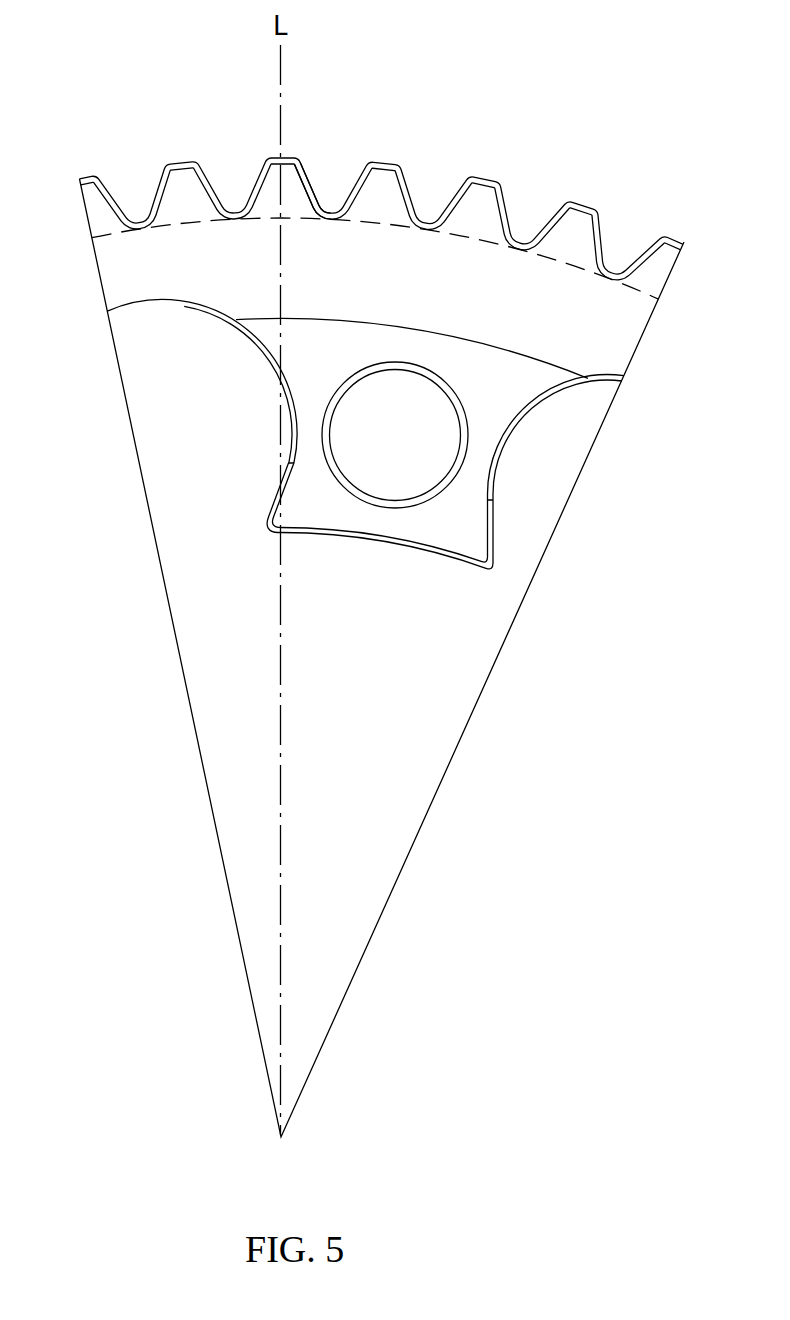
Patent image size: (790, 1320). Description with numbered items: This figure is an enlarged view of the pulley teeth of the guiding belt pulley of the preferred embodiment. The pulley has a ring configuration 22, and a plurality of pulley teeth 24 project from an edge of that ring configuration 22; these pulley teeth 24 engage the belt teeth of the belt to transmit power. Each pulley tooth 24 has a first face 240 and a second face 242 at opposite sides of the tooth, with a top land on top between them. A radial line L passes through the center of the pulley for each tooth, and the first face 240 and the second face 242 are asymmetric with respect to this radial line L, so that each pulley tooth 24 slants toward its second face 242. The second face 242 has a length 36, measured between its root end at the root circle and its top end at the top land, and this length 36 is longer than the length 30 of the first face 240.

The ring configuration 22 is at (610, 360).
The pulley teeth 24 is at (378, 162).
The first face 240 is at (264, 187).
The second face 242 is at (301, 190).
The length of the first face 30 is at (271, 205).
The length of the second face 36 is at (316, 197).